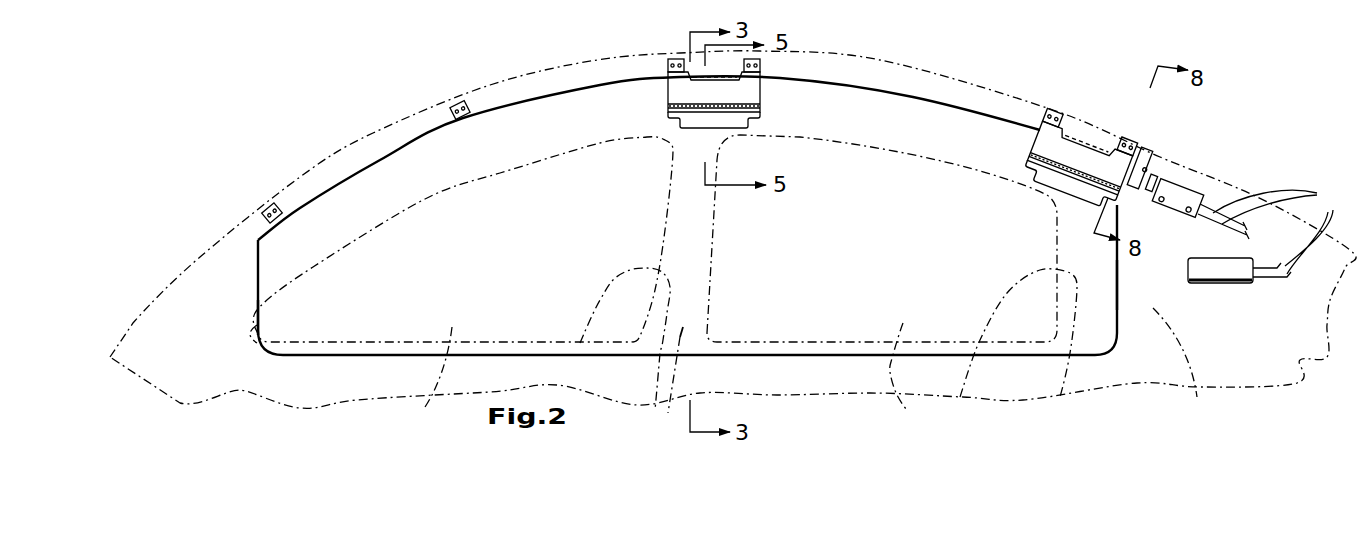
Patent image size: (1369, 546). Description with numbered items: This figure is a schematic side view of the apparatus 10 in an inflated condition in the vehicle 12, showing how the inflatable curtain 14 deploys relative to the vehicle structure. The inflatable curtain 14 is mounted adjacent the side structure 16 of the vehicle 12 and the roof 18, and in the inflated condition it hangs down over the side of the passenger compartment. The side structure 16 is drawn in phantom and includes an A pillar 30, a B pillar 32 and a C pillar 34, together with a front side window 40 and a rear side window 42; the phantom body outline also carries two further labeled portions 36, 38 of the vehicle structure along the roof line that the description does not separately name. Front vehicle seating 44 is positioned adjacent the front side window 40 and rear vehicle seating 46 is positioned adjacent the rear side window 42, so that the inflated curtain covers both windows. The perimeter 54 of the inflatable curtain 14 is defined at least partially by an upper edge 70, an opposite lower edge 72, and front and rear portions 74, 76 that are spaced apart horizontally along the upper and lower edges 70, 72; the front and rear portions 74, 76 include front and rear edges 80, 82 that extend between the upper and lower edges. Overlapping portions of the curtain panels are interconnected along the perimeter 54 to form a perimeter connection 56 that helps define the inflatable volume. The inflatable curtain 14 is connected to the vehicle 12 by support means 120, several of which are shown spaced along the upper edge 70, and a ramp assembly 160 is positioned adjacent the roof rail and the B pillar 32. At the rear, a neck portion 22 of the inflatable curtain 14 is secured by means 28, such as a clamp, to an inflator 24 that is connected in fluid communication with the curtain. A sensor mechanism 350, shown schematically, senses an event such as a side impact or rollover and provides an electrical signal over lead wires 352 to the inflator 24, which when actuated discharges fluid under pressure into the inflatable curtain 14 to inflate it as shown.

The apparatus 10 is at (503, 55).
The vehicle 12 is at (345, 62).
The inflatable curtain 14 is at (523, 287).
The side structure 16 is at (667, 386).
The roof 18 is at (487, 85).
The neck portion 22 is at (1140, 170).
The inflator 24 is at (1193, 207).
The means 28 is at (1155, 172).
The A pillar 30 is at (222, 283).
The B pillar 32 is at (697, 240).
The C pillar 34 is at (1181, 216).
The pillar portion 36 is at (302, 182).
The header portion 38 is at (567, 100).
The front side window 40 is at (424, 381).
The rear side window 42 is at (914, 375).
The front vehicle seating 44 is at (610, 293).
The rear vehicle seating 46 is at (1007, 293).
The perimeter 54 is at (347, 355).
The perimeter connection 56 is at (777, 353).
The upper edge 70 is at (598, 83).
The lower edge 72 is at (837, 355).
The front portion 74 is at (290, 310).
The rear portion 76 is at (1080, 267).
The front edge 80 is at (257, 306).
The rear edge 82 is at (1117, 284).
The support means 120 is at (270, 208).
The ramp assembly 160 is at (738, 92).
The sensor mechanism 350 is at (1223, 273).
The lead wires 352 is at (1284, 227).